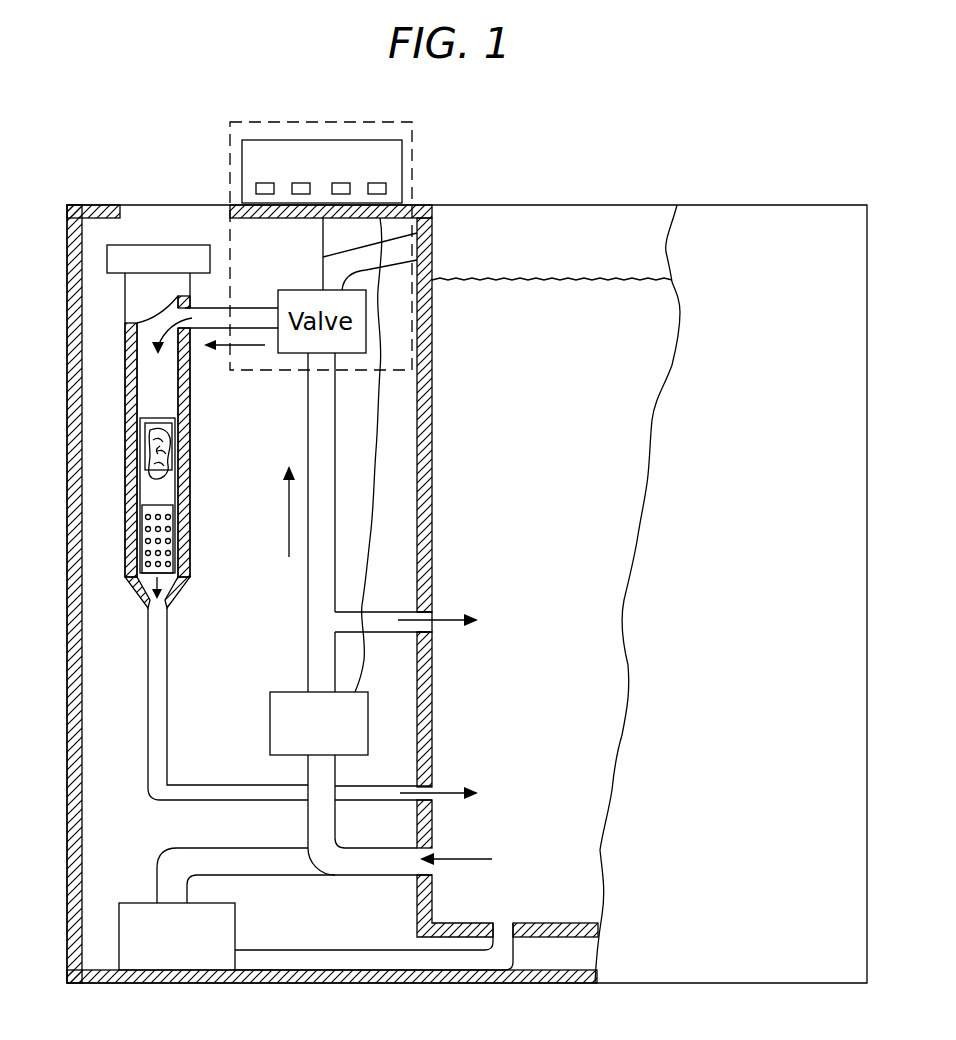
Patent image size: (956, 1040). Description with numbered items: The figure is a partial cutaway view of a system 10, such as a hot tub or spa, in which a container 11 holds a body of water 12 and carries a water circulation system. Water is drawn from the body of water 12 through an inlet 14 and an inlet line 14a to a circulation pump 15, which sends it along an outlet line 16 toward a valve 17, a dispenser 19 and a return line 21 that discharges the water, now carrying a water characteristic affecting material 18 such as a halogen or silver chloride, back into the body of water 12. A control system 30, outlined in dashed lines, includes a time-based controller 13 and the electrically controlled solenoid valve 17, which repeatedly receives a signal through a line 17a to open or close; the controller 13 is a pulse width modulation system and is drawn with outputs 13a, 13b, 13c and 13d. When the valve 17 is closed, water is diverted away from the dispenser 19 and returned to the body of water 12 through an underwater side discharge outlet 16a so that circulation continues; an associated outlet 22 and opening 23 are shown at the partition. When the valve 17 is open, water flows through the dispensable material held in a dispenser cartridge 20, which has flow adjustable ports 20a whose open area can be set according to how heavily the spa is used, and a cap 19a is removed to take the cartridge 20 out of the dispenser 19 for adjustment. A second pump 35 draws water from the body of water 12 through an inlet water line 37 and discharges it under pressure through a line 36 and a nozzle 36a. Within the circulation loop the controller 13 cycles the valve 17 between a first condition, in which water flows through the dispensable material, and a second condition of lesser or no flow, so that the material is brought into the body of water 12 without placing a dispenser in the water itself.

The system 10 is at (446, 146).
The container 11 is at (867, 527).
The body of water 12 is at (570, 474).
The time-based controller 13 is at (320, 140).
The controller output 13a is at (256, 187).
The controller output 13b is at (292, 186).
The controller output 13c is at (351, 184).
The controller output 13d is at (387, 188).
The inlet 14 is at (434, 846).
The inlet line 14a is at (360, 877).
The circulation pump 15 is at (270, 733).
The outlet line 16 is at (337, 530).
The underwater side discharge outlet 16a is at (378, 610).
The valve 17 is at (430, 263).
The line 17a is at (430, 237).
The water characteristic affecting material 18 is at (243, 310).
The dispenser 19 is at (192, 432).
The cap 19a is at (158, 257).
The dispenser cartridge 20 is at (145, 460).
The flow adjustable ports 20a is at (146, 514).
The return line 21 is at (168, 653).
The outlet pipe to tank 22 is at (434, 785).
The outlet opening 23 is at (434, 633).
The control system 30 is at (268, 118).
The second pump 35 is at (132, 902).
The pipe from second pump 36 is at (315, 950).
The nozzle 36a is at (513, 923).
The inlet water line 37 is at (223, 846).